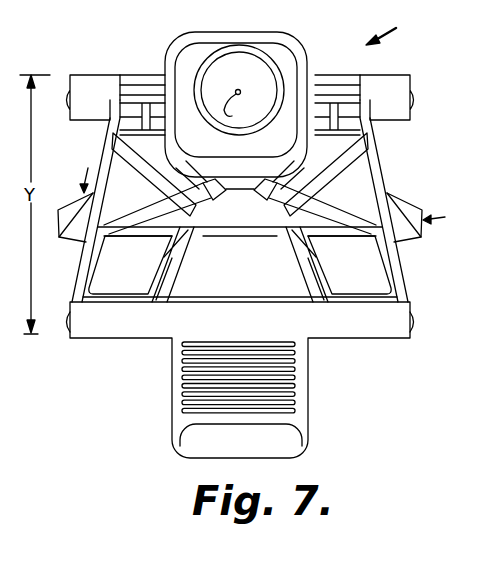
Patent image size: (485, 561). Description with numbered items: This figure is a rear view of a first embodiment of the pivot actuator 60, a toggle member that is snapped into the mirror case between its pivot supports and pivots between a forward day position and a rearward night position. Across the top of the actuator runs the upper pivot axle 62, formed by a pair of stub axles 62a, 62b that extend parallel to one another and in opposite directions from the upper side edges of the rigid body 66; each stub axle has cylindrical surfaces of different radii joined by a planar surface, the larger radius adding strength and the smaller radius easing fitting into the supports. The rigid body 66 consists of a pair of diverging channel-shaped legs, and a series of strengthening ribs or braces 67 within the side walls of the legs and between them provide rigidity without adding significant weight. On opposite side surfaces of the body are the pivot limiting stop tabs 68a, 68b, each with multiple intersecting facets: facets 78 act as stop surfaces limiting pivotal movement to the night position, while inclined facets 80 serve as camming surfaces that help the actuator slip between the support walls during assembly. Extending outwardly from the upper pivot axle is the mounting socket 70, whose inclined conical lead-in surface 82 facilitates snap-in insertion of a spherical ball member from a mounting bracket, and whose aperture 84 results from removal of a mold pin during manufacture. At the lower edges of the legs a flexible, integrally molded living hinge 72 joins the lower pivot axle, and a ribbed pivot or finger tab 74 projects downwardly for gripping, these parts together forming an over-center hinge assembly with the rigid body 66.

The pivot actuator 60 is at (383, 27).
The upper pivot axle 62 is at (323, 78).
The stub axle 62a is at (88, 82).
The stub axle 62b is at (383, 78).
The rigid body 66 is at (375, 165).
The strengthening ribs or braces 67 is at (160, 187).
The pivot limiting stop tab 68a is at (92, 171).
The pivot limiting stop tab 68b is at (450, 211).
The mounting socket 70 is at (208, 66).
The living hinge 72 is at (102, 303).
The pivot or finger tab 74 is at (292, 417).
The facets 78 is at (72, 233).
The inclined facets 80 is at (63, 212).
The conical lead-in surface 82 is at (257, 52).
The aperture 84 is at (237, 110).